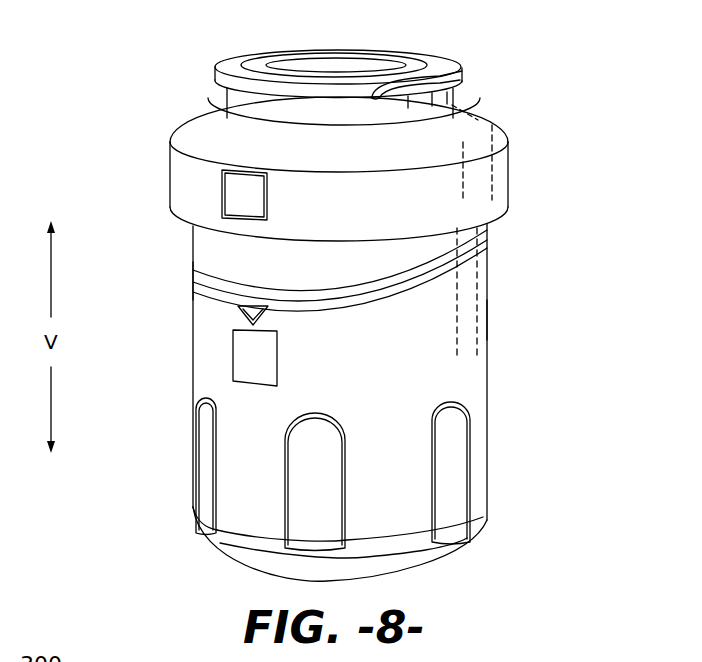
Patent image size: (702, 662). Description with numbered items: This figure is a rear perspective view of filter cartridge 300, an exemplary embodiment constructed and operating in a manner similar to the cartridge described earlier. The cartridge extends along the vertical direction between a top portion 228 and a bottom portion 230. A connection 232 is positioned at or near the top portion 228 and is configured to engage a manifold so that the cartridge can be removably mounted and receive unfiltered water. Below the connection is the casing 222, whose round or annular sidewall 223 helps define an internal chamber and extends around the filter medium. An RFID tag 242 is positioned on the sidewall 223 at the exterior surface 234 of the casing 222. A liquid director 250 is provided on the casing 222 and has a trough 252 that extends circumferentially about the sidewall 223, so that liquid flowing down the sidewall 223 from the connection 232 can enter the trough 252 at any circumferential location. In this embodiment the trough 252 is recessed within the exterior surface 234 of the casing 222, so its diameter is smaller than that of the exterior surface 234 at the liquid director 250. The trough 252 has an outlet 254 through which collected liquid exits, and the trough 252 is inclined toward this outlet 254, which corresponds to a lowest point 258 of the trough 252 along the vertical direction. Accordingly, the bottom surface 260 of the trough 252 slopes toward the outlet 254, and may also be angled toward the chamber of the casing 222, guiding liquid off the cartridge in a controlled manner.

The filter cartridge 300 is at (148, 84).
The connection 232 is at (440, 48).
The top portion 228 is at (480, 90).
The liquid director 250 is at (215, 285).
The lowest point 258 is at (253, 288).
The trough 252 is at (342, 290).
The bottom surface 260 is at (483, 252).
The outlet 254 is at (230, 317).
The sidewall 223 is at (450, 322).
The RFID tag 242 is at (245, 350).
The exterior surface 234 is at (457, 385).
The casing 222 is at (193, 363).
The bottom portion 230 is at (490, 538).